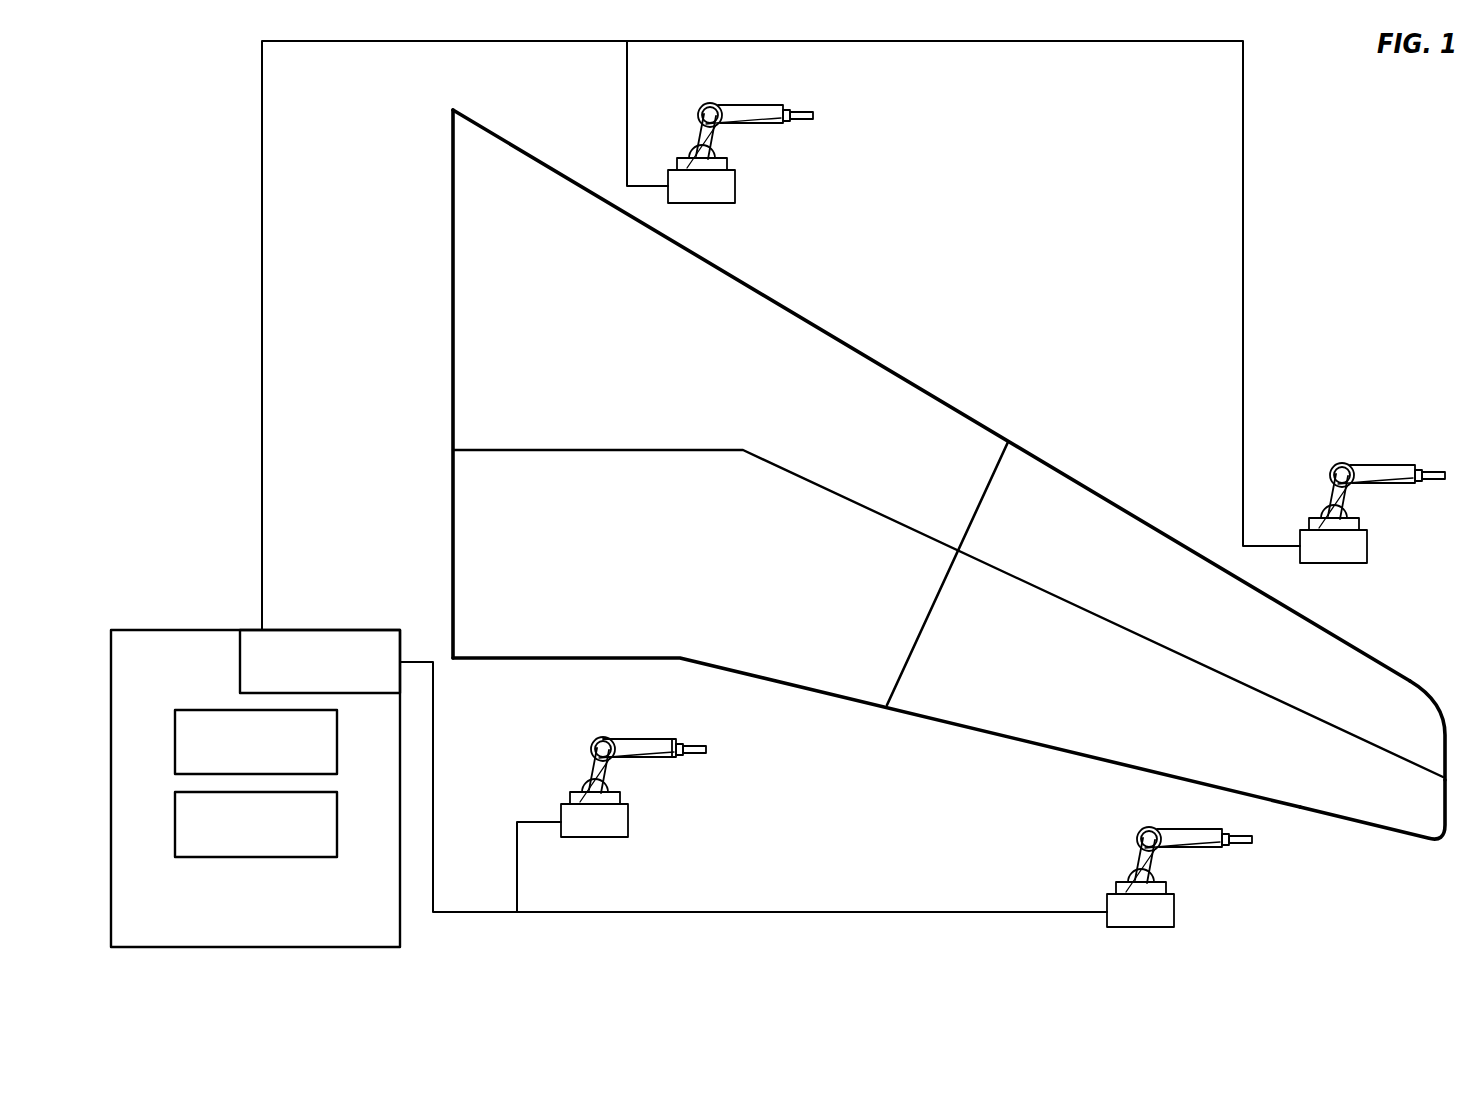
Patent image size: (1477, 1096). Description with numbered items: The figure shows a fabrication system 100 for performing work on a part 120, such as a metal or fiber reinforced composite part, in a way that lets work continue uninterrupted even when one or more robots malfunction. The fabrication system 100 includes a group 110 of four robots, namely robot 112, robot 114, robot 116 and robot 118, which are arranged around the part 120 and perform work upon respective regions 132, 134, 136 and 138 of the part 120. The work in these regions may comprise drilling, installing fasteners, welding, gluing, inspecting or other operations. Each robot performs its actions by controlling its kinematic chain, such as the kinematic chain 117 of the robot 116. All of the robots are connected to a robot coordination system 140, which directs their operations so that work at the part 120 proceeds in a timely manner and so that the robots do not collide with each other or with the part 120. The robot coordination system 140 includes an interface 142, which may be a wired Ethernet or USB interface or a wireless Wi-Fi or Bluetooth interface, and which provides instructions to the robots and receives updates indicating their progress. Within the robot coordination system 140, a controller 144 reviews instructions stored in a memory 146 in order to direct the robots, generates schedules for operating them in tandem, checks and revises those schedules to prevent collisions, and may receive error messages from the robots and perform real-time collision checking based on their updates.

The fabrication system 100 is at (1376, 108).
The group of robots 110 is at (846, 92).
The robot 112 is at (1390, 465).
The robot 114 is at (745, 105).
The robot 116 is at (628, 823).
The kinematic chain 117 is at (597, 713).
The robot 118 is at (1174, 912).
The part 120 is at (1397, 856).
The region 132 is at (1352, 666).
The region 134 is at (927, 420).
The region 136 is at (470, 553).
The region 138 is at (1038, 730).
The robot coordination system 140 is at (274, 940).
The interface 142 is at (338, 684).
The controller 144 is at (274, 765).
The memory 146 is at (274, 846).